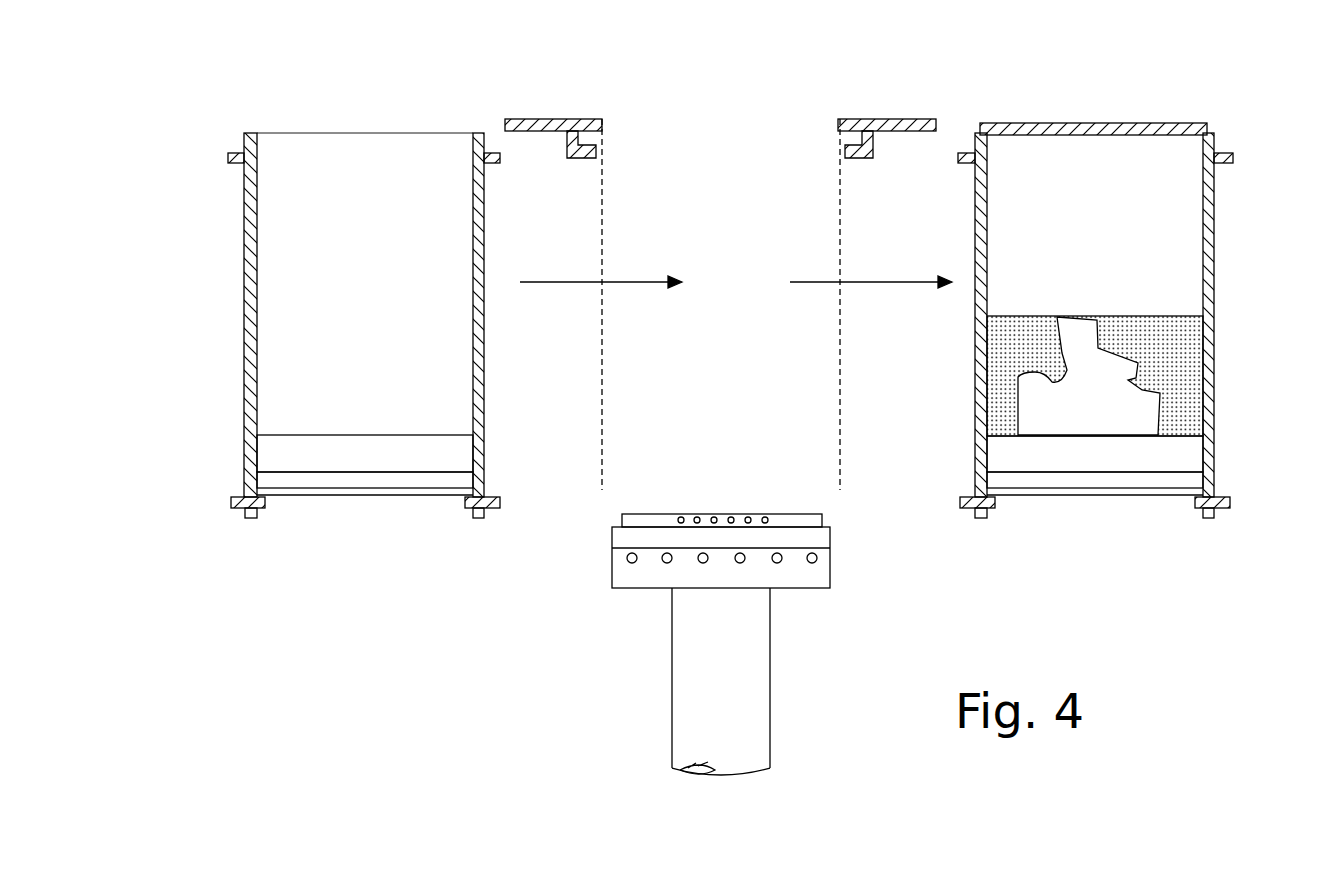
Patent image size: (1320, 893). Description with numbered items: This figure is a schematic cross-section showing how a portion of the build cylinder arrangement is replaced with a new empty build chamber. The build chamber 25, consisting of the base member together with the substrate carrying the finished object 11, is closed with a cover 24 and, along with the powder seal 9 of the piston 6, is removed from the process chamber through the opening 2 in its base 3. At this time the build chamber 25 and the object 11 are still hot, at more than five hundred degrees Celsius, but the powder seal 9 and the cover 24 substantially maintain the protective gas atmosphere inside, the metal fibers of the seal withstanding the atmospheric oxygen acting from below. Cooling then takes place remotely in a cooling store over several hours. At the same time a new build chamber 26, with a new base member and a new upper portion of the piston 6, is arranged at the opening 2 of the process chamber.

The opening 2 is at (716, 116).
The base 3 is at (562, 121).
The piston 6 is at (625, 568).
The powder seal 9 is at (1137, 482).
The finished object 11 is at (1135, 405).
The cover 24 is at (1128, 125).
The build chamber 25 is at (1132, 307).
The new build chamber 26 is at (333, 348).